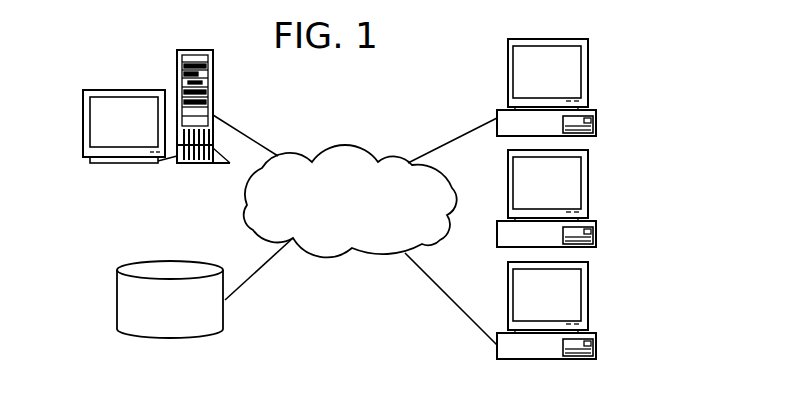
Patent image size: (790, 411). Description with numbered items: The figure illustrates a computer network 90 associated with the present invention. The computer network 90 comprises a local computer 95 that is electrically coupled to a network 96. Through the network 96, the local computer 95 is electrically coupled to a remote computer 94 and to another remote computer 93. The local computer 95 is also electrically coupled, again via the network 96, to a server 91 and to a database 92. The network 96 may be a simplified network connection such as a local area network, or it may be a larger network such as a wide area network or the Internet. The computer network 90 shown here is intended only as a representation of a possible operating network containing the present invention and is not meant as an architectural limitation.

The computer network 90 is at (130, 223).
The server 91 is at (83, 102).
The database 92 is at (181, 320).
The remote computer 93 is at (588, 293).
The remote computer 94 is at (588, 182).
The local computer 95 is at (588, 68).
The network 96 is at (360, 212).